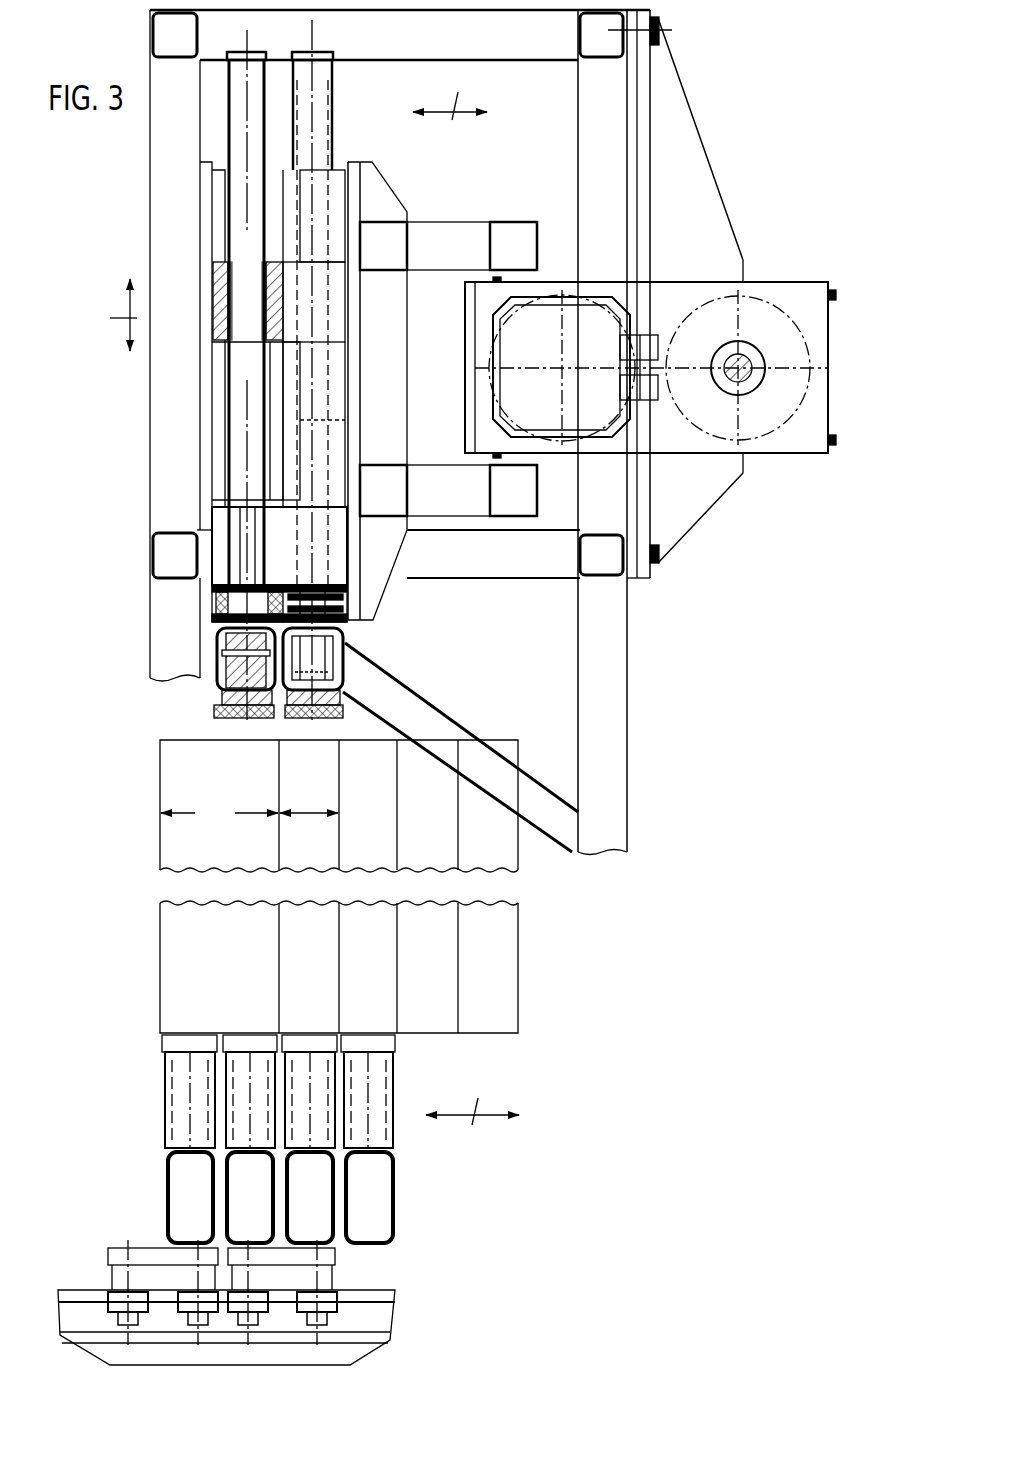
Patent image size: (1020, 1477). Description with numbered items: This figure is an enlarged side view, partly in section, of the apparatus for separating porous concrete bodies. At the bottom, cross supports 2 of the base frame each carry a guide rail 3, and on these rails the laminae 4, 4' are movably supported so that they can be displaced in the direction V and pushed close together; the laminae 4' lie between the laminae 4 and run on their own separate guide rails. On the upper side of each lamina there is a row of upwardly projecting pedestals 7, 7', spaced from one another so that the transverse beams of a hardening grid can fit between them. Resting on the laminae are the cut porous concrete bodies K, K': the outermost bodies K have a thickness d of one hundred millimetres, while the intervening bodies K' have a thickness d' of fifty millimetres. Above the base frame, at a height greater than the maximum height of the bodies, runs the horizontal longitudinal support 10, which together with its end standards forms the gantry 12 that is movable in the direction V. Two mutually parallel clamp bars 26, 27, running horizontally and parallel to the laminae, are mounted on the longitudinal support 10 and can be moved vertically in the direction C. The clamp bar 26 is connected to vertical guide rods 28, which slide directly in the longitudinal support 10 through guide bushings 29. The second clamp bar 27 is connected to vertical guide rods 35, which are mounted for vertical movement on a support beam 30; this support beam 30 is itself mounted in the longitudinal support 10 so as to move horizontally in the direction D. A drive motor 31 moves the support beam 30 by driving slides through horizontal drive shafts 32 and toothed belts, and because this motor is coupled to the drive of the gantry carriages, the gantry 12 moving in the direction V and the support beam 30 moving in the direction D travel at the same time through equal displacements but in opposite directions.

The cross support 2 is at (355, 1356).
The guide rail 3 is at (375, 1300).
The lamina 4 is at (269, 1197).
The lamina 4' is at (287, 1206).
The pedestal 7 is at (275, 1091).
The pedestal 7' is at (273, 1100).
The longitudinal support 10 is at (154, 547).
The gantry 12 is at (628, 658).
The clamp bar 26 is at (222, 693).
The clamp bar 27 is at (343, 692).
The vertical guide rod 28 is at (240, 442).
The guide bushing 29 is at (215, 278).
The support beam 30 is at (459, 218).
The drive motor 31 is at (590, 330).
The horizontal drive shaft 32 is at (748, 345).
The vertical guide rod 35 is at (318, 480).
The porous concrete body K is at (311, 886).
The porous concrete body K' is at (468, 787).
The vertical direction C is at (110, 315).
The direction of movement of the support beam D is at (450, 91).
The direction of displacement V is at (472, 1093).
The thickness d is at (219, 817).
The thickness d' is at (309, 802).